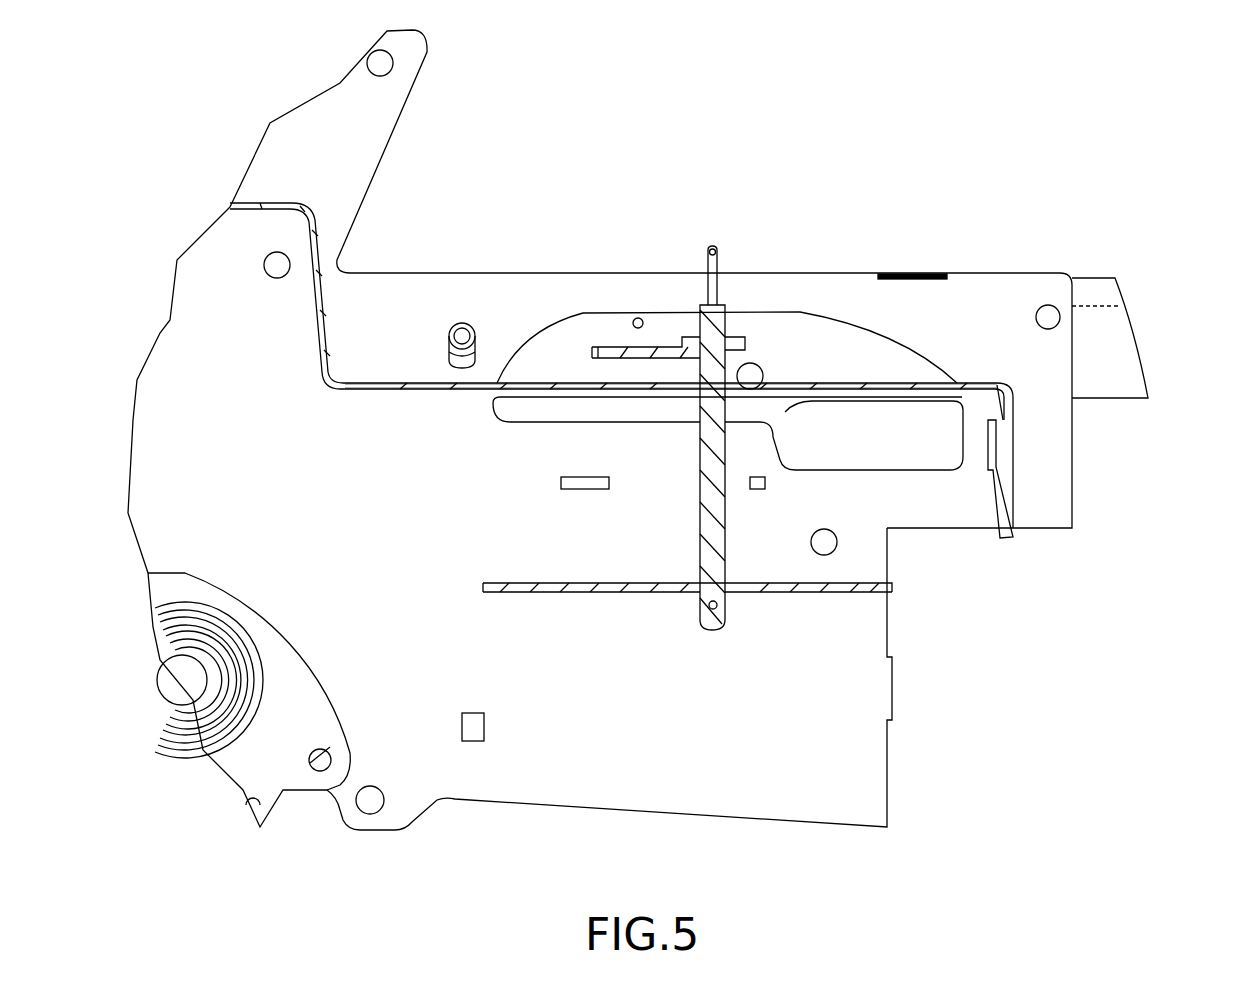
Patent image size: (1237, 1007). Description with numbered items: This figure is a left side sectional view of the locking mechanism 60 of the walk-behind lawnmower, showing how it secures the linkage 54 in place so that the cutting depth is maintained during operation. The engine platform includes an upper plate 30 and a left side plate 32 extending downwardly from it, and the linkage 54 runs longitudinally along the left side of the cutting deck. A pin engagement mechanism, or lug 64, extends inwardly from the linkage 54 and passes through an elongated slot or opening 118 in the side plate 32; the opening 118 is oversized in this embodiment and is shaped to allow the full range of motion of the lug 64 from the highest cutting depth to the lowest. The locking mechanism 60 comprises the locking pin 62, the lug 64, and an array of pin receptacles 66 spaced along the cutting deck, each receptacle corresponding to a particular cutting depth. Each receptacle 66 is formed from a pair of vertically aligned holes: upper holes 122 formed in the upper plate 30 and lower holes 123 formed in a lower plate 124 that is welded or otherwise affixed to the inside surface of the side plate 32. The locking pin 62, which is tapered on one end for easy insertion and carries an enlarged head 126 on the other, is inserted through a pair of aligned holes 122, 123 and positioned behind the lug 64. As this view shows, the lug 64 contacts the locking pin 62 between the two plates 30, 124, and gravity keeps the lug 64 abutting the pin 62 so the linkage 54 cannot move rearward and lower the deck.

The upper plate 30 is at (327, 307).
The left side plate 32 is at (802, 798).
The linkage 54 is at (1112, 337).
The locking mechanism 60 is at (761, 266).
The locking pin 62 is at (700, 313).
The pin engagement mechanism (lug) 64 is at (605, 350).
The pin receptacles 66 is at (585, 382).
The elongated slot 118 is at (877, 330).
The upper holes 122 is at (777, 393).
The lower holes 123 is at (777, 597).
The lower plate 124 is at (895, 588).
The enlarged head 126 is at (744, 340).